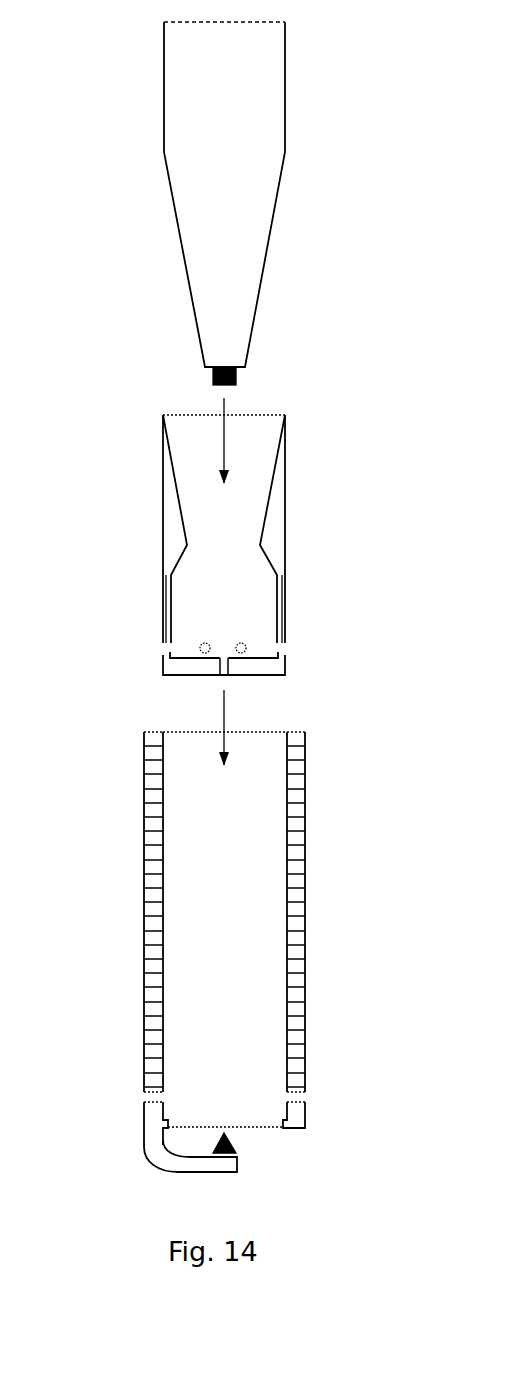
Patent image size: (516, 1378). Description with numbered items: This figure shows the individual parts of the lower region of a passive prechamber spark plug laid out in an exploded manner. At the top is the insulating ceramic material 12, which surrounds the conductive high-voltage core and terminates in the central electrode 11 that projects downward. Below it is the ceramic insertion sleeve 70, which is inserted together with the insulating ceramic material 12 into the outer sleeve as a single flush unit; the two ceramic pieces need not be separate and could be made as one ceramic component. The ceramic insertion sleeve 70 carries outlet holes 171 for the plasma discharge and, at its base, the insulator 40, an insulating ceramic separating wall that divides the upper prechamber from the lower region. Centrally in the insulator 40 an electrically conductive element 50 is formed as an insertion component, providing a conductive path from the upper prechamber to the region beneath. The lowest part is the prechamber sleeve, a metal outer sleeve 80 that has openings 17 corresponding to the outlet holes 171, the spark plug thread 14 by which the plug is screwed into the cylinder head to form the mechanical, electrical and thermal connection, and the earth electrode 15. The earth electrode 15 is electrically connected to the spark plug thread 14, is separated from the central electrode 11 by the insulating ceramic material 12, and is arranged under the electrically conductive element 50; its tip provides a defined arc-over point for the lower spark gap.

The insulating ceramic material 12 is at (215, 133).
The central electrode 11 is at (238, 376).
The ceramic insertion sleeve 70 is at (150, 510).
The outlet holes 171 is at (163, 651).
The electrically conductive element 50 is at (224, 657).
The insulator 40 is at (221, 623).
The metal outer sleeve 80 is at (219, 958).
The spark plug thread 14 is at (302, 870).
The openings 17 is at (143, 1100).
The earth electrode 15 is at (240, 1148).